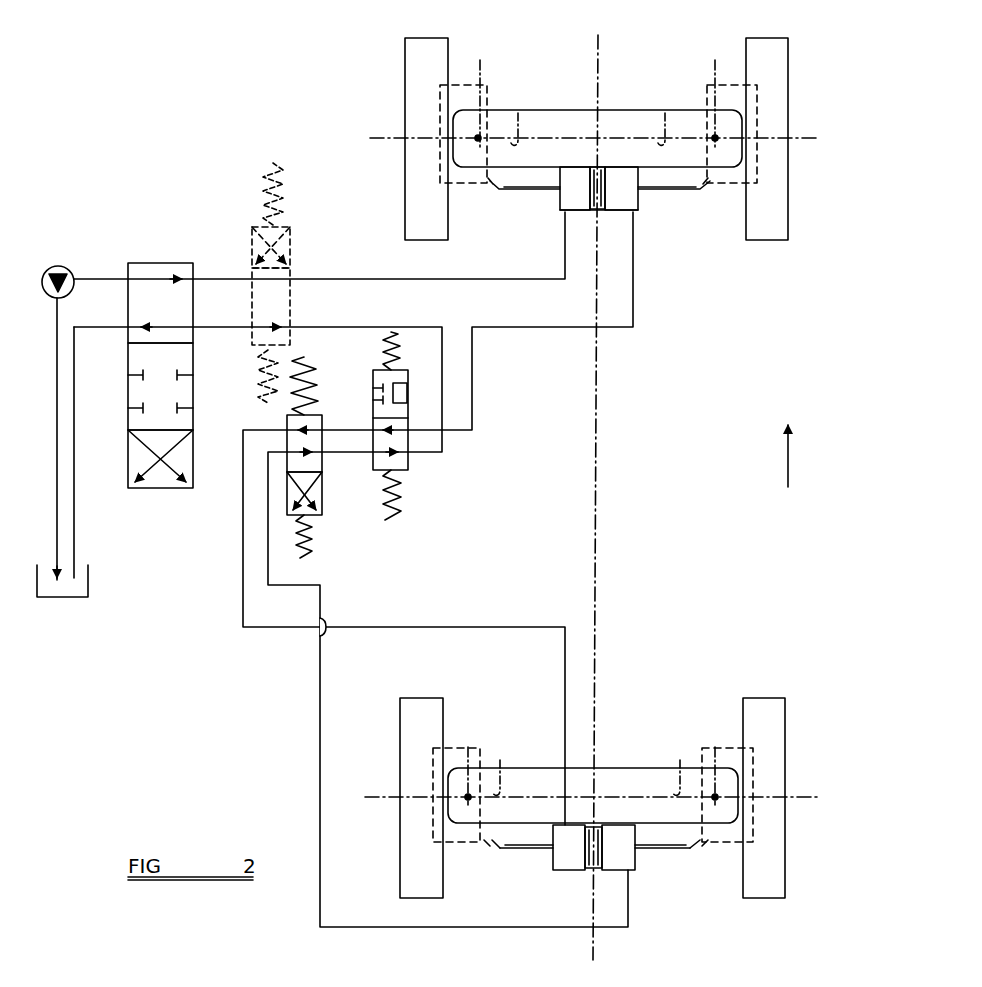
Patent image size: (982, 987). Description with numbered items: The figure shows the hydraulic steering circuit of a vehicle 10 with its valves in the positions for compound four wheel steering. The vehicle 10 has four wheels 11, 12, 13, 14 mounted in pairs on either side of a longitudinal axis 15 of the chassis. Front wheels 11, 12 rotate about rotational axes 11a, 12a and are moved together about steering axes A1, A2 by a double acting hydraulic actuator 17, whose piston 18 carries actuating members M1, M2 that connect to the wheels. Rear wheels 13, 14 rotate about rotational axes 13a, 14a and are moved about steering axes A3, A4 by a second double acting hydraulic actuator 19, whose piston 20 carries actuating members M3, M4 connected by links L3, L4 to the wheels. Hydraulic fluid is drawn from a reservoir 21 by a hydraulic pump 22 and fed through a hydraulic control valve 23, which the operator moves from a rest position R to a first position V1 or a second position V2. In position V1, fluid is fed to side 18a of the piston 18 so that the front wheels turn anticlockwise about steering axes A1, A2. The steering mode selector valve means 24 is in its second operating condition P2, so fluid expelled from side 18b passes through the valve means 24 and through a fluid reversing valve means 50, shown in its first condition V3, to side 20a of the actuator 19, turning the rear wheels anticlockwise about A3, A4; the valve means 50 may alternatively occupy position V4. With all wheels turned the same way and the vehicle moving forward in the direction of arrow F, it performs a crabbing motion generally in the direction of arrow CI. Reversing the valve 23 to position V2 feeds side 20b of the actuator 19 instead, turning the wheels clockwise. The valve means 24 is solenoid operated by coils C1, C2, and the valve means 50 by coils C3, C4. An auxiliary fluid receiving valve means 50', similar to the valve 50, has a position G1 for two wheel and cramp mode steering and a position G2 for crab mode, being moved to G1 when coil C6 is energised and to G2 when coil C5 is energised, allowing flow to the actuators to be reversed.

The vehicle 10 is at (197, 695).
The front wheel 11 is at (442, 38).
The front wheel 12 is at (747, 38).
The rotational axis 11a is at (520, 107).
The rotational axis 12a is at (670, 107).
The rear wheel 13 is at (428, 698).
The rear wheel 14 is at (744, 698).
The rotational axis 13a is at (500, 760).
The rotational axis 14a is at (686, 760).
The longitudinal axis 15 is at (601, 432).
The double acting hydraulic actuator 17 is at (610, 213).
The piston 18 is at (616, 167).
The one side of piston 18a is at (560, 200).
The other side of piston 18b is at (635, 200).
The double acting hydraulic actuator 19 is at (603, 874).
The piston 20 is at (612, 825).
The one side of actuator 20a is at (566, 863).
The other side of actuator 20b is at (625, 862).
The reservoir 21 is at (90, 577).
The hydraulic pump 22 is at (61, 266).
The hydraulic control valve 23 is at (182, 407).
The steering mode selector valve means 24 is at (449, 437).
The fluid reversing valve means 50 is at (335, 456).
The auxiliary fluid receiving valve means 50' is at (285, 277).
The steering axis A1 is at (486, 94).
The steering axis A2 is at (723, 94).
The steering axis A3 is at (459, 767).
The steering axis A4 is at (724, 767).
The coil C1 is at (403, 505).
The coil C2 is at (401, 346).
The coil C3 is at (313, 540).
The coil C4 is at (314, 386).
The coil C5 is at (258, 370).
The coil C6 is at (290, 172).
The arrow indicating crabbing direction CI is at (695, 352).
The arrow indicating forward direction F is at (790, 465).
The valve position G1 is at (290, 298).
The valve position G2 is at (290, 240).
The link L3 is at (490, 850).
The link L4 is at (688, 850).
The actuating member M1 is at (517, 192).
The actuating member M2 is at (667, 192).
The actuating member M3 is at (517, 855).
The actuating member M4 is at (663, 855).
The second operating condition P2 is at (410, 470).
The rest position R is at (193, 395).
The first position V1 is at (195, 303).
The second position V2 is at (193, 470).
The first condition V3 is at (322, 420).
The alternative compound steering position V4 is at (322, 500).